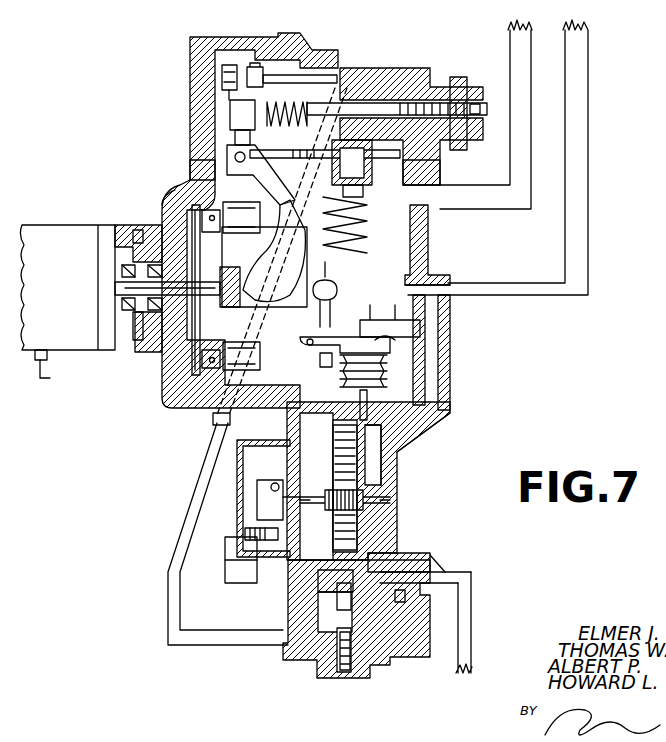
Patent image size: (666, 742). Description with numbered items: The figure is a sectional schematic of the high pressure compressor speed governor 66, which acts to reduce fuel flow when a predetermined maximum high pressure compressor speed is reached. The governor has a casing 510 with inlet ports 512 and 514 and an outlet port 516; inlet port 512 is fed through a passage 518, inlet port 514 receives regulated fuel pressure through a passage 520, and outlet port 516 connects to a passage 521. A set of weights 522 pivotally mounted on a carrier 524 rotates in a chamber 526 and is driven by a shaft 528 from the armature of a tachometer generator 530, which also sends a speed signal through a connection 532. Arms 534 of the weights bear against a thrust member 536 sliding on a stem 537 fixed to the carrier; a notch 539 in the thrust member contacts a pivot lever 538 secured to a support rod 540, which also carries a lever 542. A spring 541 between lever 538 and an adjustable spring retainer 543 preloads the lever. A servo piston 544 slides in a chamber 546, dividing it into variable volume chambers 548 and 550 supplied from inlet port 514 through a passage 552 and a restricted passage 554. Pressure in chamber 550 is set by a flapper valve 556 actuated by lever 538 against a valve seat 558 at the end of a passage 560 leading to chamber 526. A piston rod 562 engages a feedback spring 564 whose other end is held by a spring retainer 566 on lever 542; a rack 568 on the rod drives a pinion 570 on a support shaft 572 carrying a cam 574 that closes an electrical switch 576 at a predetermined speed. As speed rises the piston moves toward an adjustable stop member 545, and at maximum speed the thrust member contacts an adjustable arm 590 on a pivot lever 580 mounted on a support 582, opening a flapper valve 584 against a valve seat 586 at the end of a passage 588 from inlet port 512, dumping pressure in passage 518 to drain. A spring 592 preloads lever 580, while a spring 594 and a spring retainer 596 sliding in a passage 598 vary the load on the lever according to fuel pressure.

The high pressure compressor speed governor 66 is at (118, 135).
The casing 510 is at (170, 408).
The inlet port 512 is at (450, 310).
The inlet port 514 is at (435, 565).
The outlet port 516 is at (445, 222).
The passage 518 is at (580, 92).
The passage 520 is at (466, 620).
The passage 521 is at (528, 135).
The weights 522 is at (240, 202).
The carrier 524 is at (172, 225).
The chamber 526 is at (302, 331).
The shaft 528 is at (130, 290).
The tachometer generator 530 is at (50, 240).
The connection 532 is at (61, 371).
The arms 534 is at (205, 300).
The thrust member 536 is at (232, 308).
The stem 537 is at (140, 340).
The pivot lever 538 is at (195, 180).
The notch 539 is at (272, 265).
The support rod 540 is at (228, 112).
The spring 541 is at (335, 50).
The lever 542 is at (296, 150).
The adjustable spring retainer 543 is at (380, 92).
The servo piston 544 is at (390, 553).
The adjustable stop member 545 is at (345, 672).
The chamber 546 is at (313, 617).
The variable volume chamber 548 is at (313, 590).
The variable volume chamber 550 is at (330, 626).
The passage 552 is at (440, 556).
The restricted passage 554 is at (402, 618).
The flapper valve 556 is at (232, 63).
The valve seat 558 is at (262, 67).
The passage 560 is at (205, 470).
The piston rod 562 is at (355, 515).
The feedback spring 564 is at (360, 212).
The spring retainer 566 is at (420, 178).
The rack 568 is at (360, 478).
The pinion 570 is at (365, 500).
The support shaft 572 is at (290, 470).
The cam 574 is at (258, 498).
The electrical switch 576 is at (248, 533).
The pivot lever 580 is at (318, 353).
The support 582 is at (312, 343).
The flapper valve 584 is at (400, 337).
The valve seat 586 is at (400, 318).
The passage 588 is at (430, 280).
The adjustable arm 590 is at (325, 288).
The spring 592 is at (388, 381).
The spring 594 is at (390, 372).
The spring retainer 596 is at (435, 418).
The passage 598 is at (395, 445).